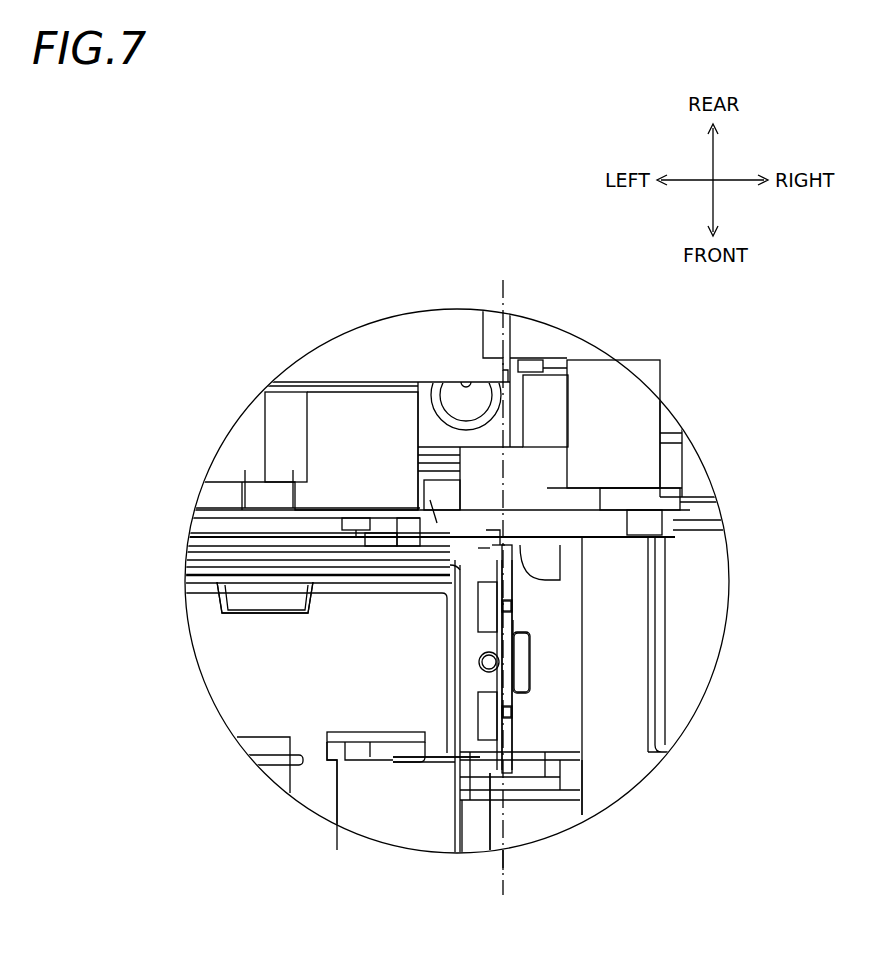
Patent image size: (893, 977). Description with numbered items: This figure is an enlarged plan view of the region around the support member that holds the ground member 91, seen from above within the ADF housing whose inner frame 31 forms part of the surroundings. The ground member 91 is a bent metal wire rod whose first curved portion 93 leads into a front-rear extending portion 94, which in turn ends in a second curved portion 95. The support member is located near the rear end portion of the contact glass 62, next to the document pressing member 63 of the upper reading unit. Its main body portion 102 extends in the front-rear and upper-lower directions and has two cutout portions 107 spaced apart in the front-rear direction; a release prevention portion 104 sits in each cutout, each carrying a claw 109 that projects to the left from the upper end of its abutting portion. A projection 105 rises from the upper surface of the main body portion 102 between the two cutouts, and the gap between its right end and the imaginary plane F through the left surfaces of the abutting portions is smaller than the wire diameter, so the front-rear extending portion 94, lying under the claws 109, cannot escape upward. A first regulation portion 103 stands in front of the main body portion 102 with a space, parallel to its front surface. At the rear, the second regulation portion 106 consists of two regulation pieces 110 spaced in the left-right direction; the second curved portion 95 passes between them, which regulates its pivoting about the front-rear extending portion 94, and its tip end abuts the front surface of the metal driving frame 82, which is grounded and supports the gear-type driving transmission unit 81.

The driving frame 82 is at (437, 523).
The regulation pieces 110 is at (493, 530).
The second regulation portion 106 is at (498, 553).
The driving transmission unit 81 is at (600, 413).
The second curved portion 95 is at (483, 547).
The cutout portions 107 is at (485, 599).
The release prevention portions 104 is at (508, 590).
The claw 109 is at (510, 607).
The front-rear extending portion 94 is at (513, 627).
The ground member 91 is at (518, 642).
The projection 105 is at (486, 661).
The main body portion 102 is at (505, 684).
The contact glass 62 is at (232, 693).
The document pressing member 63 is at (360, 807).
The first curved portion 93 is at (411, 767).
The first regulation portion 103 is at (490, 780).
The inner frame 31 is at (555, 818).
The imaginary plane F is at (505, 860).